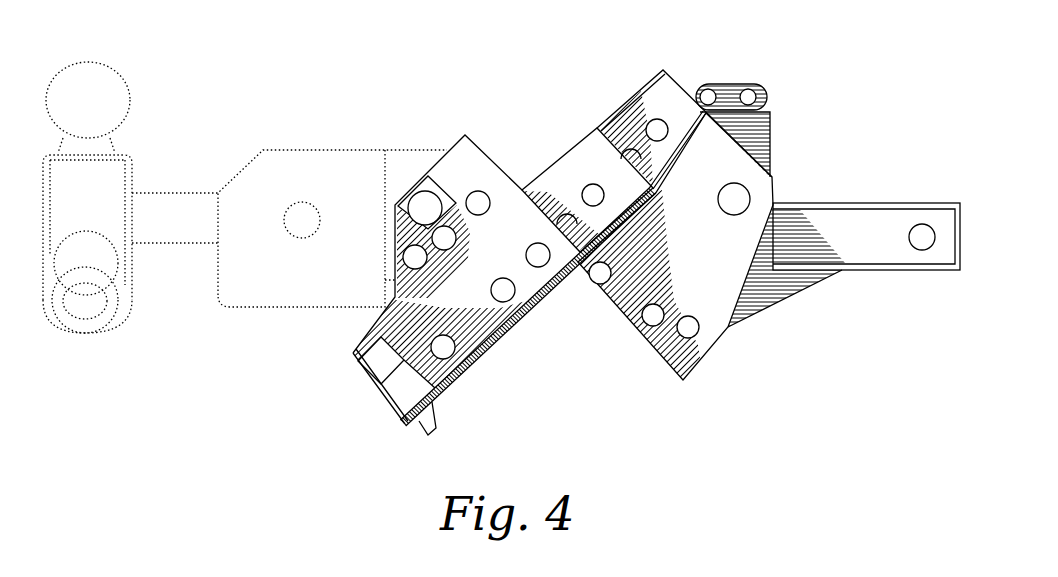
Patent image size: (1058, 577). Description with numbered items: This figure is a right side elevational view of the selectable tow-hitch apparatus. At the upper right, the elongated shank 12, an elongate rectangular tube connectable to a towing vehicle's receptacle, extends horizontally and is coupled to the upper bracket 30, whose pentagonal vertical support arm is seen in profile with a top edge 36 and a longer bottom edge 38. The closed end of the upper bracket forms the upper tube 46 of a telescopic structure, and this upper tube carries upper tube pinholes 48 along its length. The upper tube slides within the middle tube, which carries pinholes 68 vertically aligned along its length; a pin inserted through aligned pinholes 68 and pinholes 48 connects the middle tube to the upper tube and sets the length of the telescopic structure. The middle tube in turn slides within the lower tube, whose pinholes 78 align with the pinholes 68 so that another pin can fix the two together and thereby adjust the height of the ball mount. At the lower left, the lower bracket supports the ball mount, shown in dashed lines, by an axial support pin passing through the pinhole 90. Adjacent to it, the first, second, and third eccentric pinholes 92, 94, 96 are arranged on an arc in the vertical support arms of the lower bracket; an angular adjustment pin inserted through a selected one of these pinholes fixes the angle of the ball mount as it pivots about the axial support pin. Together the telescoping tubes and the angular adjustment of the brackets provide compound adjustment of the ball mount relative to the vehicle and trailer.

The elongated shank 12 is at (847, 225).
The upper bracket 30 is at (713, 332).
The top edge 36 is at (773, 146).
The bottom edge 38 is at (676, 363).
The upper tube 46 is at (675, 98).
The upper tube pinholes 48 is at (650, 129).
The pinholes 68 is at (592, 190).
The pinholes 78 is at (542, 257).
The pinhole 90 is at (421, 206).
The first pinhole 92 is at (410, 254).
The second pinhole 94 is at (445, 237).
The third pinhole 96 is at (480, 197).